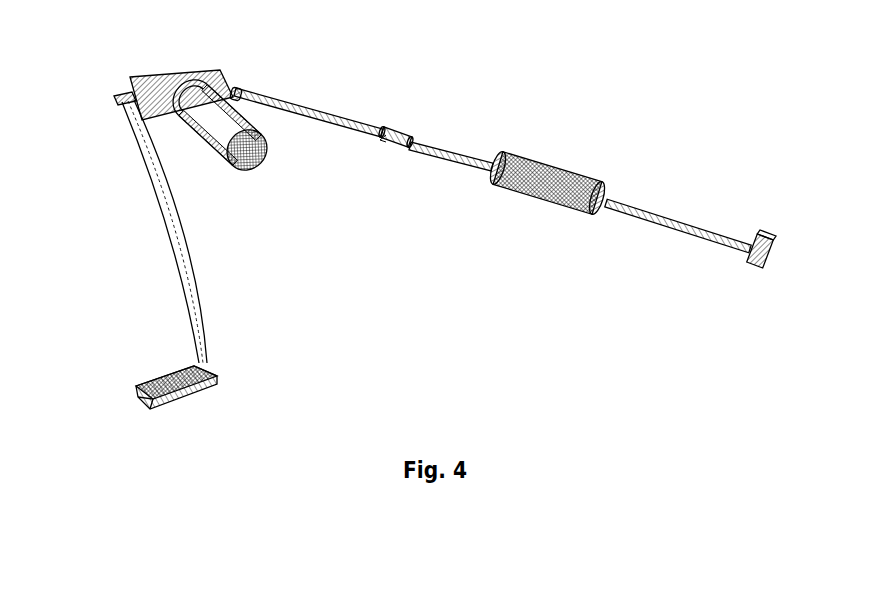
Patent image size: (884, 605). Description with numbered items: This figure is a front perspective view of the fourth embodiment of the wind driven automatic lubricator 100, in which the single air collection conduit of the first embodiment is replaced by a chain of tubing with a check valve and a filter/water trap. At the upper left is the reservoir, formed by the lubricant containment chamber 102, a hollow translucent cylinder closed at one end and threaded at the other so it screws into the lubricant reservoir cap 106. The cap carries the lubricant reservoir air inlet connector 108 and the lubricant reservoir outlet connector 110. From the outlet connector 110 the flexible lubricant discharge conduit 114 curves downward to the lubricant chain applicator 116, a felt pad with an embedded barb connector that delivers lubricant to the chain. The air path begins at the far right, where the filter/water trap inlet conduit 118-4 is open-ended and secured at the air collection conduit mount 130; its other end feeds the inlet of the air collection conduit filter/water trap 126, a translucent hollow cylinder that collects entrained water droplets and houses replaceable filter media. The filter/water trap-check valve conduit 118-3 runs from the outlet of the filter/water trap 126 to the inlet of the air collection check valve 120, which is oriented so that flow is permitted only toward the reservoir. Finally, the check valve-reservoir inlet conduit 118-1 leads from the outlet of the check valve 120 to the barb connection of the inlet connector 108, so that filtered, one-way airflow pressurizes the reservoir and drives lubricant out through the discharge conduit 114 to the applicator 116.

The wind driven automatic lubricator 100 is at (424, 290).
The lubricant containment chamber 102 is at (256, 171).
The lubricant reservoir cap 106 is at (160, 73).
The lubricant reservoir air inlet connector 108 is at (237, 88).
The lubricant reservoir outlet connector 110 is at (79, 117).
The lubricant discharge conduit 114 is at (132, 231).
The lubricant chain applicator 116 is at (142, 362).
The check valve-reservoir inlet conduit 118-1 is at (319, 80).
The filter/water trap-check valve conduit 118-3 is at (495, 118).
The filter/water trap inlet conduit 118-4 is at (685, 200).
The air collection check valve 120 is at (370, 109).
The air collection conduit filter/water trap 126 is at (554, 167).
The air collection conduit mount 130 is at (802, 219).